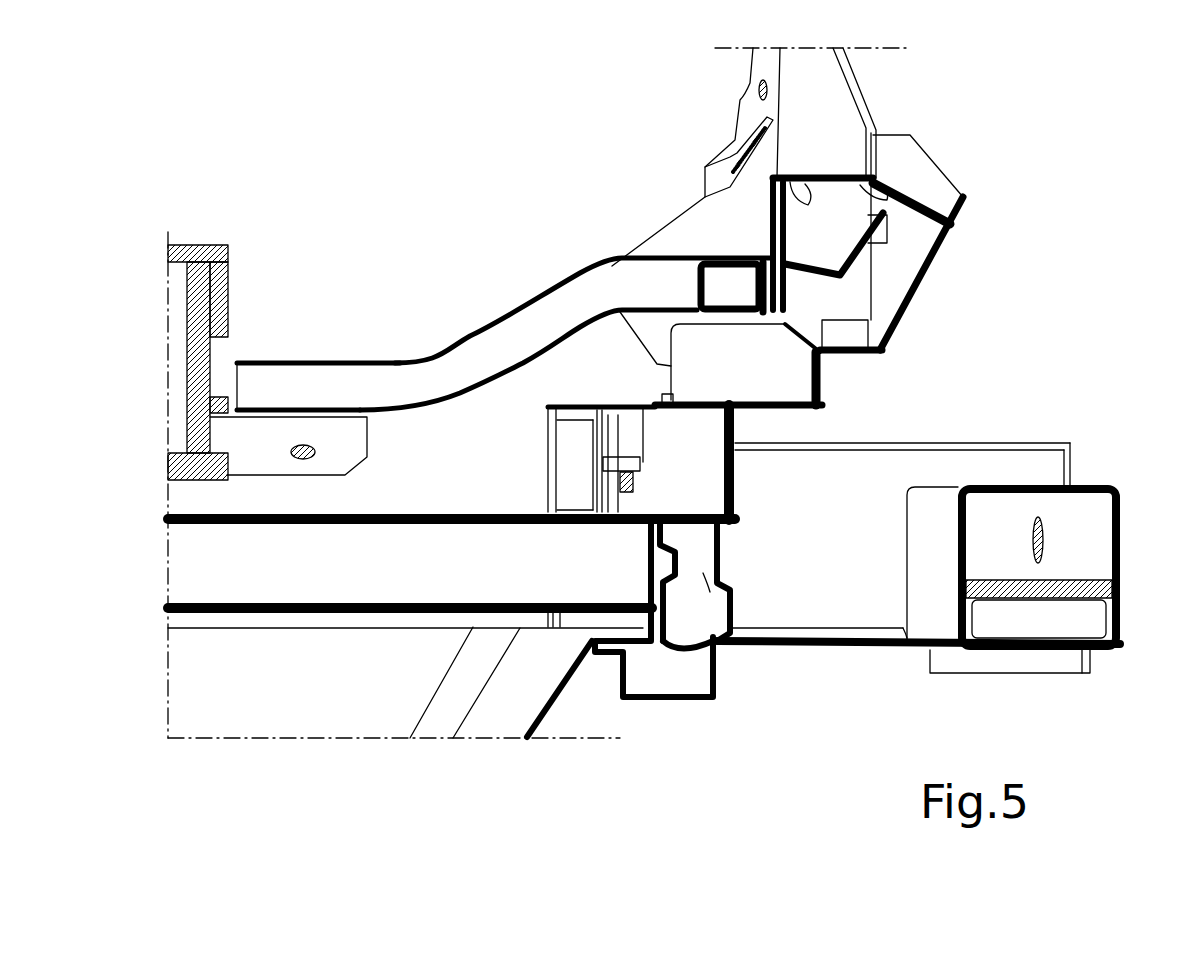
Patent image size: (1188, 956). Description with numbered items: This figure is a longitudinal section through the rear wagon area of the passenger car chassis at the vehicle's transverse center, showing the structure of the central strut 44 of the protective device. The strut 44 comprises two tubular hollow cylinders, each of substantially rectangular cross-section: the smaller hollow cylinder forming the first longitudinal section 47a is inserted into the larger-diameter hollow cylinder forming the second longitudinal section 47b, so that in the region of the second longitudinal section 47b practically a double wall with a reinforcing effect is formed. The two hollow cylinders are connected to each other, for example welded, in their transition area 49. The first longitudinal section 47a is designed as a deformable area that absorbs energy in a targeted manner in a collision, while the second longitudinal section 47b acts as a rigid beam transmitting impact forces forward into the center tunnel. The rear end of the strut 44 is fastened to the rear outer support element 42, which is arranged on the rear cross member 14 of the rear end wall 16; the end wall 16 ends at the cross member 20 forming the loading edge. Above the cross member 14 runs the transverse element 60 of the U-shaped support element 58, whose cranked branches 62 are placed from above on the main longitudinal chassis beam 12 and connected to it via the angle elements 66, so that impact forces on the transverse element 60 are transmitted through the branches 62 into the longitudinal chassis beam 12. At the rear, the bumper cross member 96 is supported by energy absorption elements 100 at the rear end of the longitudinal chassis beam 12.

The main longitudinal chassis beam 12 is at (508, 483).
The rear cross member 14 is at (665, 699).
The rear end wall 16 is at (730, 642).
The cross member 20 is at (950, 252).
The rear outer support element 42 is at (733, 500).
The strut 44 is at (452, 508).
The first longitudinal section 47a is at (537, 614).
The second longitudinal section 47b is at (303, 614).
The transition area 49 is at (475, 614).
The U-shaped support element 58 is at (378, 385).
The transverse element 60 is at (717, 253).
The branch 62 is at (310, 383).
The angle element 66 is at (260, 447).
The rear bumper cross member 96 is at (1079, 483).
The energy absorption element 100 is at (843, 555).